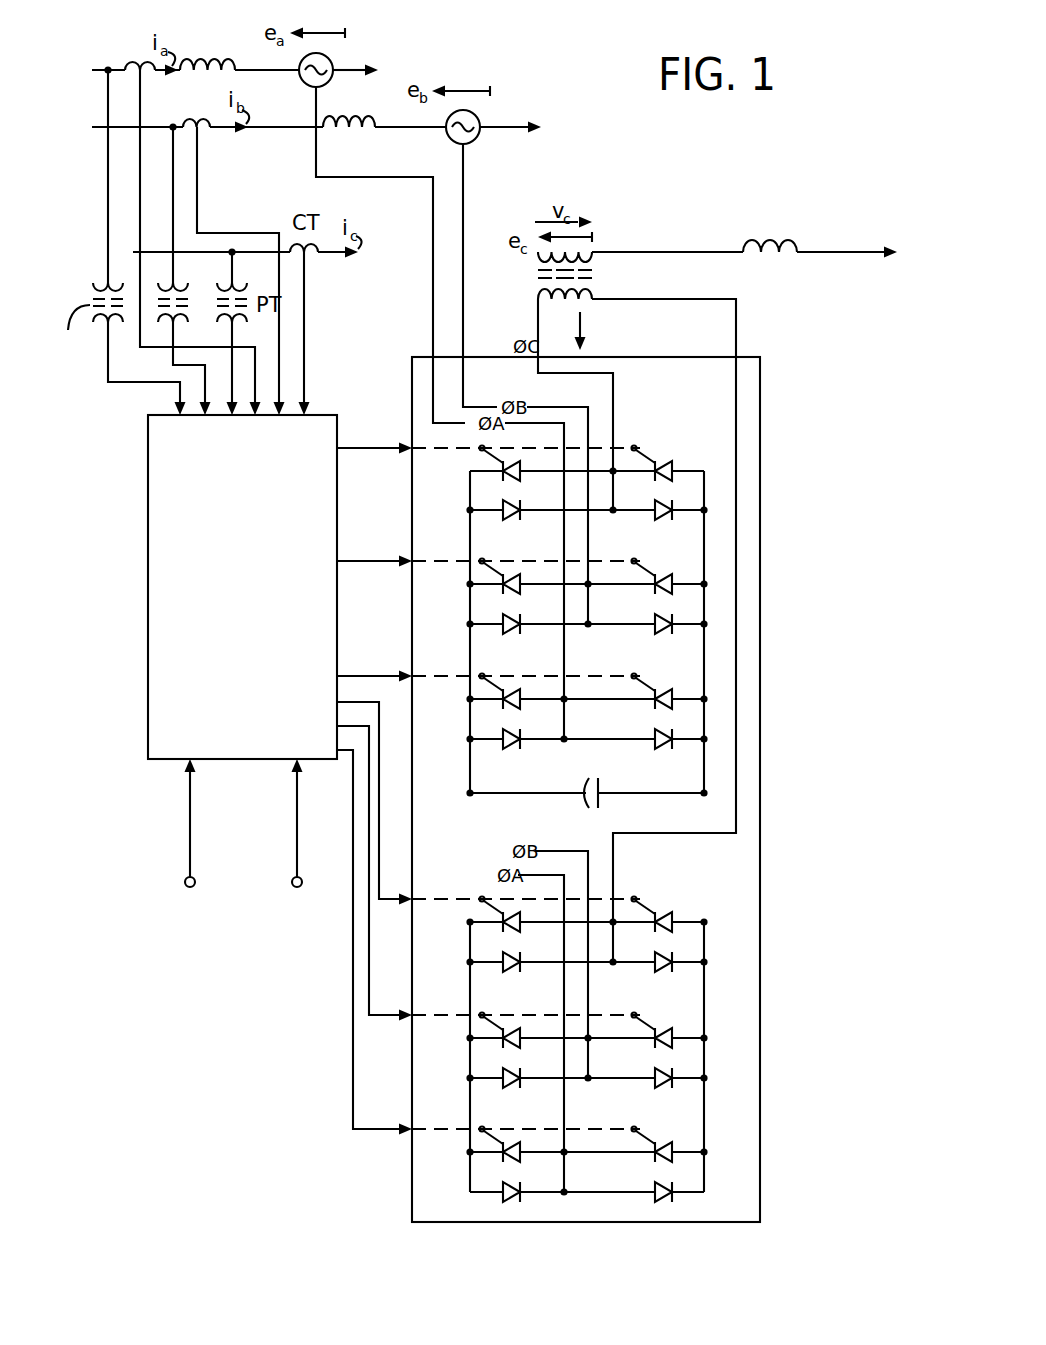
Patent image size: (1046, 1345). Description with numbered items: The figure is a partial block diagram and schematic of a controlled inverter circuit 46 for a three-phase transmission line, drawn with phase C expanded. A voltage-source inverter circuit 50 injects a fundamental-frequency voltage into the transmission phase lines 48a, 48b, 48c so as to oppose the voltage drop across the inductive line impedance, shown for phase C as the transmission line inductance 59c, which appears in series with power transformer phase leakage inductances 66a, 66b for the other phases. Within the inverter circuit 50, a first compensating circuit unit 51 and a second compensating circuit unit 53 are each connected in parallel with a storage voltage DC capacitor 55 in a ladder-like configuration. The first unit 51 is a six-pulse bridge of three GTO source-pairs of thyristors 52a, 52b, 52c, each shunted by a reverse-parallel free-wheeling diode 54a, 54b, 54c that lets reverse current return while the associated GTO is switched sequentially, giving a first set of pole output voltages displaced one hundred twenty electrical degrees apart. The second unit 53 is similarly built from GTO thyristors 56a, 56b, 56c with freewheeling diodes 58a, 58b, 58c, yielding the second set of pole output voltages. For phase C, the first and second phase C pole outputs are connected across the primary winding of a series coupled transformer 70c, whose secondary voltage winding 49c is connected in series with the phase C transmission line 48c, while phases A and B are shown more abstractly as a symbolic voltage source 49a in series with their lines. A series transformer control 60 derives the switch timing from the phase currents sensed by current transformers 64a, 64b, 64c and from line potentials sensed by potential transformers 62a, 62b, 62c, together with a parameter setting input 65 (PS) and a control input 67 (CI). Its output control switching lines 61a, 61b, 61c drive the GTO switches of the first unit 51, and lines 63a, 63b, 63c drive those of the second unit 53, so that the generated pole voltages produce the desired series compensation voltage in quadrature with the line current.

The controlled inverter circuit 46 is at (729, 206).
The phase A transmission line 48a is at (354, 66).
The phase B transmission line 48b is at (504, 125).
The phase C transmission line 48c is at (653, 251).
The voltage source symbolic representation 49a is at (300, 67).
The secondary voltage winding 49c is at (596, 291).
The voltage-source inverter circuit 50 is at (762, 470).
The first compensating circuit unit 51 is at (669, 403).
The GTO thyristor 52a is at (519, 708).
The GTO thyristor 52b is at (519, 593).
The GTO thyristor 52c is at (519, 480).
The second compensating circuit unit 53 is at (669, 865).
The free-wheeling diode 54a is at (512, 750).
The free-wheeling diode 54b is at (512, 635).
The free-wheeling diode 54c is at (512, 521).
The storage voltage DC capacitor 55 is at (600, 786).
The GTO source-pair thyristor 56a is at (519, 1161).
The GTO source-pair thyristor 56b is at (519, 1047).
The GTO source-pair thyristor 56c is at (519, 931).
The freewheeling diode 58a is at (506, 1200).
The freewheeling diode 58b is at (512, 1089).
The freewheeling diode 58c is at (512, 973).
The transmission line inductance 59c is at (798, 262).
The series transformer control 60 is at (336, 413).
The output control switching line 61a is at (388, 674).
The output control switching line 61b is at (388, 559).
The output control switching line 61c is at (388, 446).
The potential transformer 62a is at (113, 330).
The potential transformer 62b is at (212, 282).
The potential transformer 62c is at (226, 324).
The output control switching line 63a is at (353, 1106).
The output control switching line 63b is at (371, 968).
The output control switching line 63c is at (381, 710).
The current transformer 64a is at (127, 62).
The current transformer 64b is at (200, 135).
The current transformer 64c is at (306, 262).
The parameter setting input 65 is at (190, 850).
The power transformer phase leakage inductance 66a is at (205, 60).
The power transformer phase leakage inductance 66b is at (352, 138).
The control input 67 is at (297, 850).
The series coupled transformer 70c is at (536, 262).